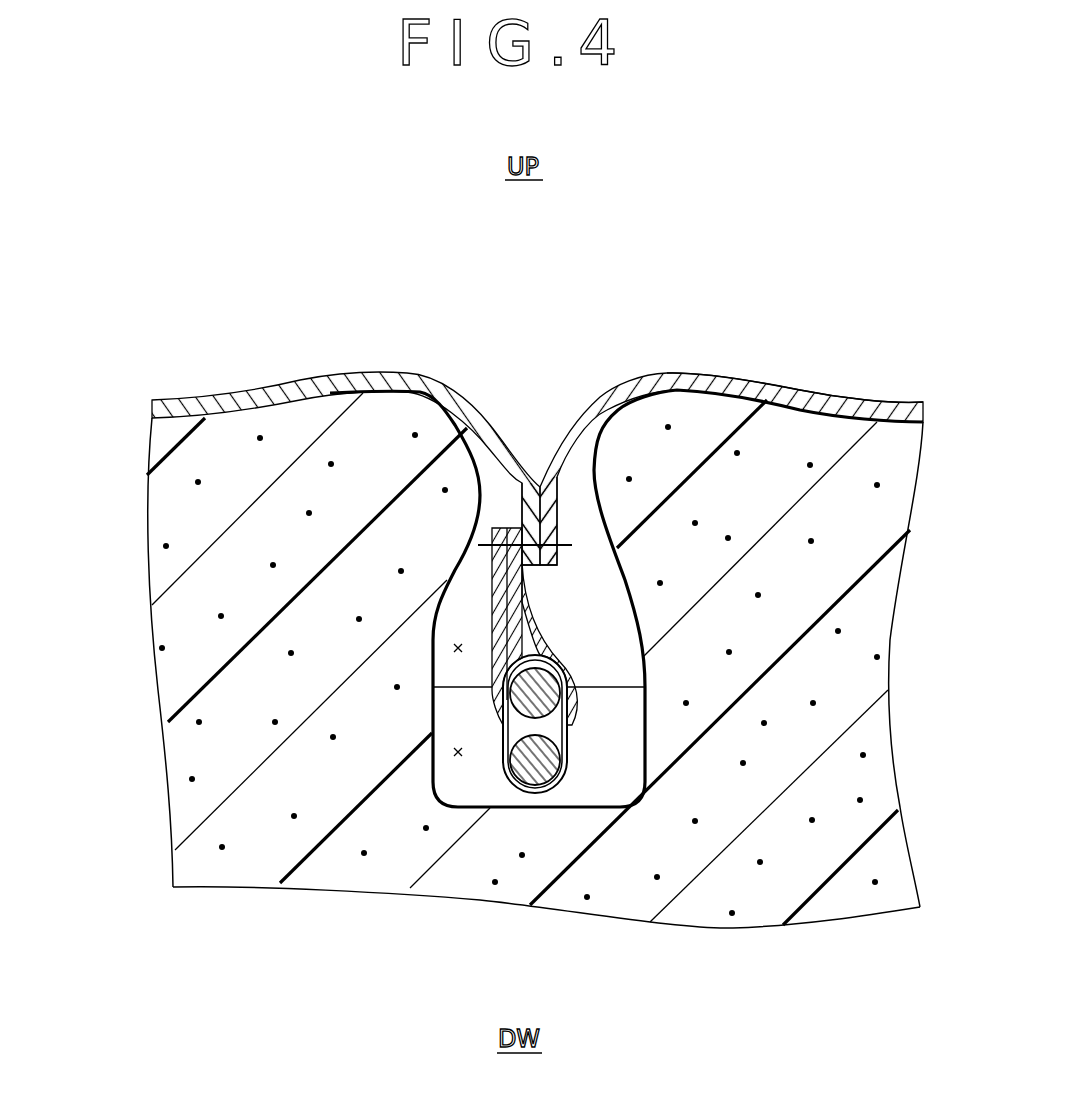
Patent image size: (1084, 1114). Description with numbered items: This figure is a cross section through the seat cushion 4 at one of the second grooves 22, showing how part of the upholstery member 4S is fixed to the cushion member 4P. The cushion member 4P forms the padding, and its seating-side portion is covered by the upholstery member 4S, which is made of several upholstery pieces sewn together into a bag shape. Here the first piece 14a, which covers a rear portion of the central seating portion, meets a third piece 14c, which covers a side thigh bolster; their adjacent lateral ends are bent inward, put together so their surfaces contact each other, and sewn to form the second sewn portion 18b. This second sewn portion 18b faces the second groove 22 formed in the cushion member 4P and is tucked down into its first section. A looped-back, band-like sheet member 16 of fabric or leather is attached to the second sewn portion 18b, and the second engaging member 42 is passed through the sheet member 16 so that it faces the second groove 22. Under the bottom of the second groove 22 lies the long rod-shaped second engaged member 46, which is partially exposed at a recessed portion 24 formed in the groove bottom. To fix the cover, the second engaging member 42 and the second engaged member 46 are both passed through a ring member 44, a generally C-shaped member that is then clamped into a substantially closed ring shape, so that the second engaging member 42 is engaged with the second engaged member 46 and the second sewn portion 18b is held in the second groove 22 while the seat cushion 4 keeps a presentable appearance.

The seat cushion 4 is at (735, 265).
The cushion member 4P is at (830, 432).
The upholstery member 4S is at (802, 395).
The first piece 14a is at (692, 373).
The third piece 14c is at (327, 375).
The second sewn portion 18b is at (566, 517).
The sheet member 16 is at (513, 600).
The second engaging member 42 is at (538, 692).
The ring member 44 is at (567, 740).
The second engaged member 46 is at (535, 765).
The second groove 22 is at (458, 648).
The recessed portion 24 is at (458, 752).